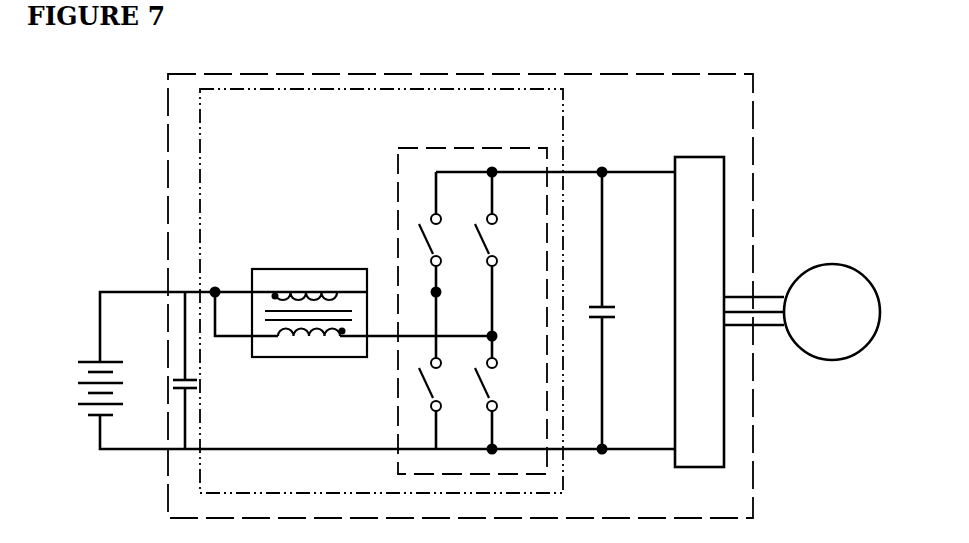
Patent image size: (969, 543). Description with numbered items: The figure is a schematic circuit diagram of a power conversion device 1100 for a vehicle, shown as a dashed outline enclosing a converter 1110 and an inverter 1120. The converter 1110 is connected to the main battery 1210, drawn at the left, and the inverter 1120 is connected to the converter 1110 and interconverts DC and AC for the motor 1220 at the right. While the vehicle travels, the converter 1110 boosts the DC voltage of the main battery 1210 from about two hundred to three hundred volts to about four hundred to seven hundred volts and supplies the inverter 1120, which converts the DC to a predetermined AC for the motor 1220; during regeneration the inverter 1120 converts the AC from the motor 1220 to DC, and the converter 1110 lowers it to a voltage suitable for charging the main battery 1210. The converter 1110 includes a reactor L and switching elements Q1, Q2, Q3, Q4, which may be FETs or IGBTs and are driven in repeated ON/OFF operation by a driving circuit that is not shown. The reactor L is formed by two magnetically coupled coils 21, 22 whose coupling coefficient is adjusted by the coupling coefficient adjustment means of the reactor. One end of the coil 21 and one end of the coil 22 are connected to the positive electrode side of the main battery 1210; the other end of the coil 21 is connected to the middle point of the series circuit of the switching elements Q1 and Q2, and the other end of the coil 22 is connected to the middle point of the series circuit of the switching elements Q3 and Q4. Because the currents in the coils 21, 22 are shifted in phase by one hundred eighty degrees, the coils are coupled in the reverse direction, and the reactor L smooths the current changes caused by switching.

The power conversion device 1100 is at (394, 296).
The converter 1110 is at (446, 291).
The inverter 1120 is at (725, 200).
The main battery 1210 is at (88, 410).
The motor 1220 is at (826, 361).
The reactor L is at (309, 296).
The coil 21 is at (287, 290).
The coil 22 is at (303, 340).
The switching element Q1 is at (443, 240).
The switching element Q2 is at (443, 384).
The switching element Q3 is at (498, 240).
The switching element Q4 is at (499, 384).